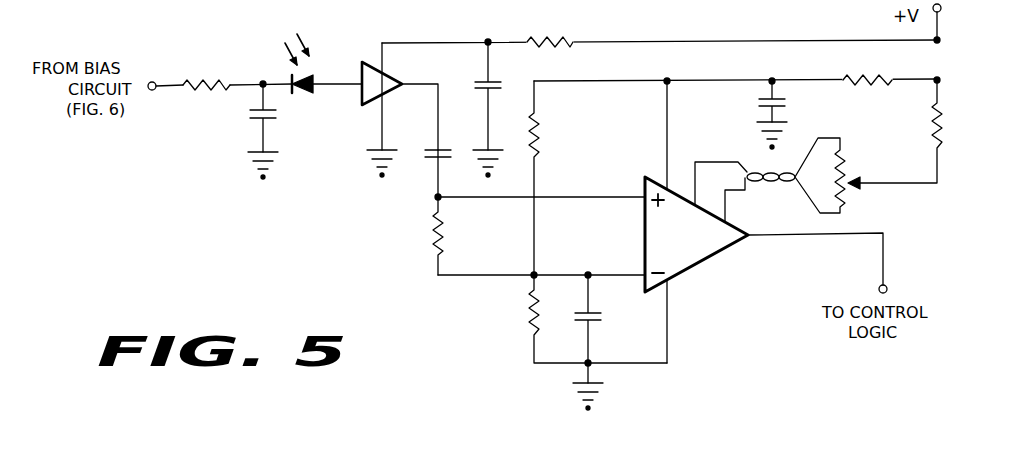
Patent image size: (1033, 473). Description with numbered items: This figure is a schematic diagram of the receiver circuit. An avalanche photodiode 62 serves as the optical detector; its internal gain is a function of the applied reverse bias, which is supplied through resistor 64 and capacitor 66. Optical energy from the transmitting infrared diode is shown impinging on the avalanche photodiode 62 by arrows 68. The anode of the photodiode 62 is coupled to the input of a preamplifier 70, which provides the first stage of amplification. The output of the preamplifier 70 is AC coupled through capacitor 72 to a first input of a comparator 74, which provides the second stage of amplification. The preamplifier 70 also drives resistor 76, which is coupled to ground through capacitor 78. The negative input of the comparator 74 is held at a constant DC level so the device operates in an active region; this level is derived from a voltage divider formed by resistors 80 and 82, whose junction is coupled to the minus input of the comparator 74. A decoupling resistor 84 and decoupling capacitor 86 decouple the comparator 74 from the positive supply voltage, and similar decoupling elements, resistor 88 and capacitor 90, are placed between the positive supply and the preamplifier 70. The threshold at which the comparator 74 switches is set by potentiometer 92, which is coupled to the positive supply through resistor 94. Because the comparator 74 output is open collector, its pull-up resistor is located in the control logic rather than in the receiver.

The avalanche photodiode 62 is at (303, 93).
The resistor 64 is at (229, 78).
The capacitor 66 is at (252, 118).
The arrows 68 is at (306, 45).
The preamplifier 70 is at (373, 105).
The capacitor 72 is at (431, 148).
The comparator 74 is at (696, 268).
The resistor 76 is at (433, 236).
The capacitor 78 is at (594, 322).
The resistor 80 is at (530, 311).
The resistor 82 is at (541, 121).
The decoupling resistor 84 is at (873, 76).
The decoupling capacitor 86 is at (782, 106).
The resistor 88 is at (533, 38).
The capacitor 90 is at (483, 80).
The potentiometer 92 is at (847, 159).
The resistor 94 is at (934, 132).